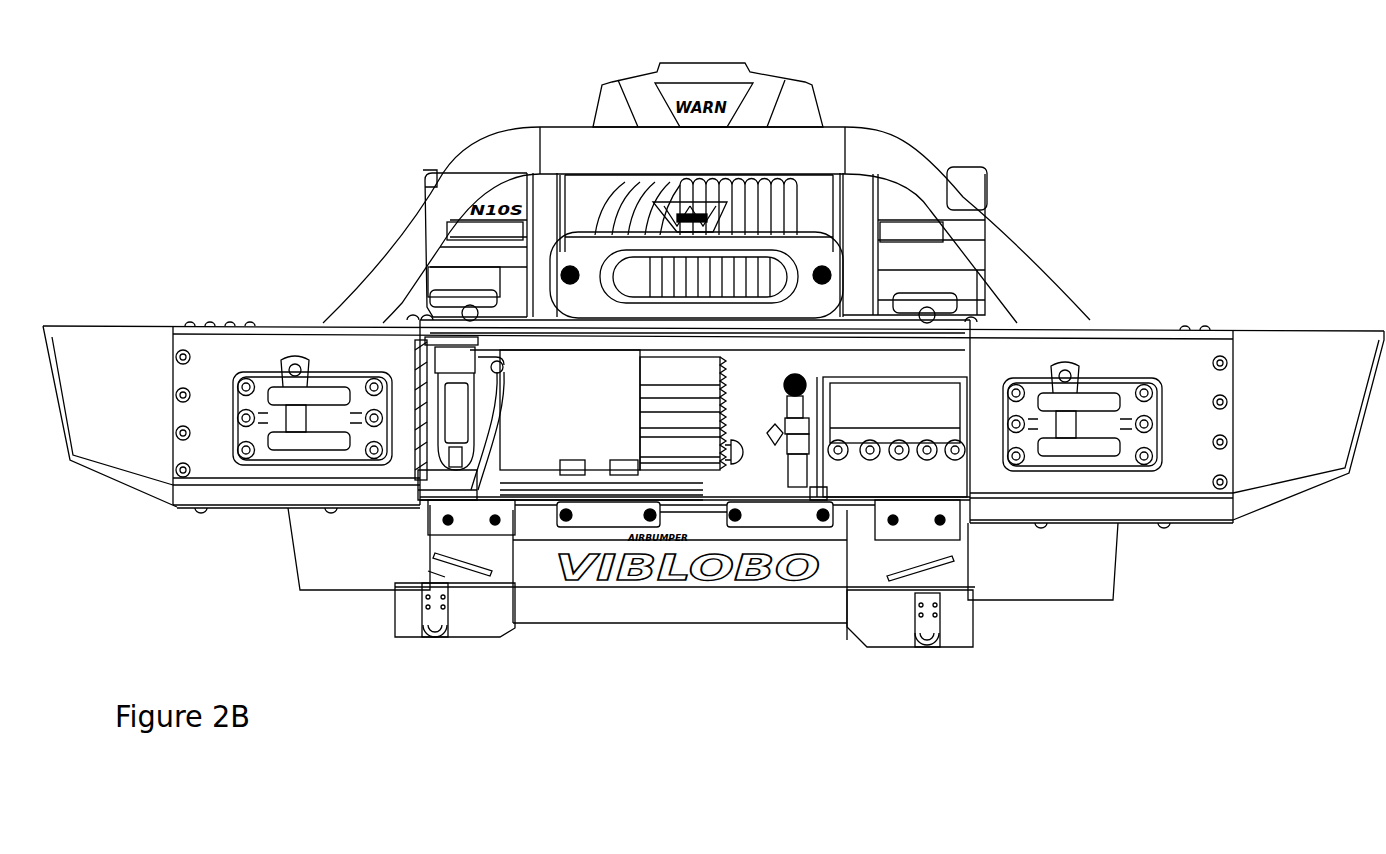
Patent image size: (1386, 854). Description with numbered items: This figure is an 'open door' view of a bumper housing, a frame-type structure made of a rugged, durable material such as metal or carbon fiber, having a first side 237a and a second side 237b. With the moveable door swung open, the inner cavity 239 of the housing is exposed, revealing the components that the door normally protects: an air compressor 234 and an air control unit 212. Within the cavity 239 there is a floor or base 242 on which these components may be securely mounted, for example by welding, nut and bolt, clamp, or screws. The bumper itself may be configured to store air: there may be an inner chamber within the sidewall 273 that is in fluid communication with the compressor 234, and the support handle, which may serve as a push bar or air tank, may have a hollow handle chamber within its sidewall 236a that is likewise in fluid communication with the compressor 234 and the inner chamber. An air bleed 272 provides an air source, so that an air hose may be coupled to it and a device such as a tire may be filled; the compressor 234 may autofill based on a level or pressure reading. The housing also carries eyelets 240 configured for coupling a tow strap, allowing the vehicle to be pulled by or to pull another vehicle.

The control unit 212 is at (893, 493).
The compressor 234 is at (583, 383).
The sidewall of the handle 236a is at (363, 273).
The first side 237a is at (1238, 328).
The second side 237b is at (155, 324).
The inner cavity 239 is at (753, 468).
The eyelets 240 is at (1110, 410).
The base 242 is at (725, 495).
The air bleed 272 is at (795, 385).
The sidewall 273 is at (427, 487).